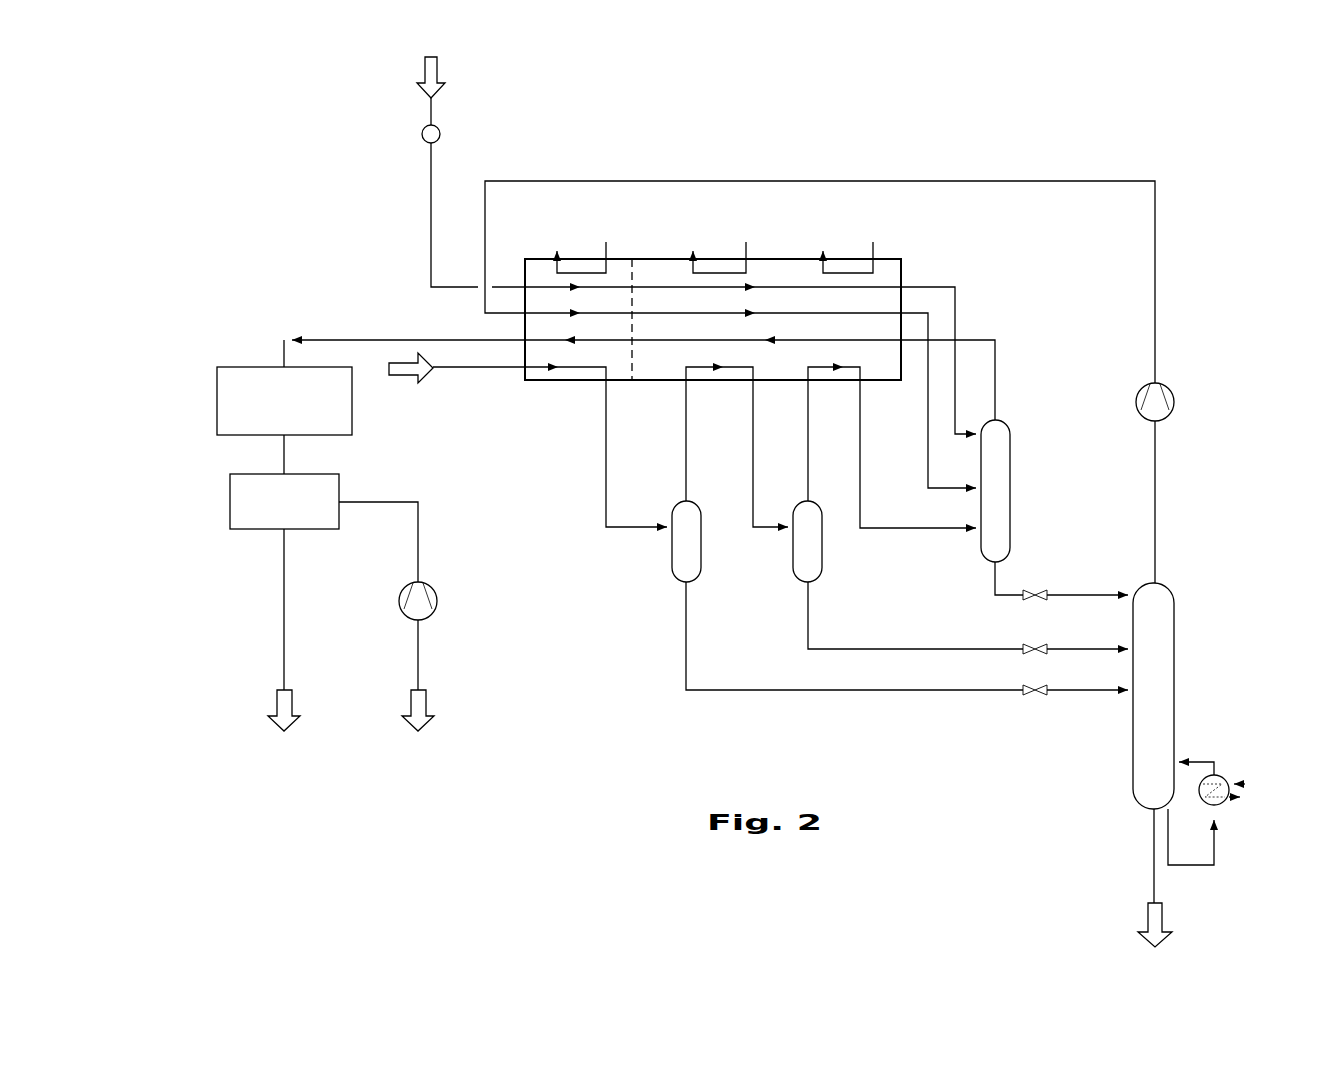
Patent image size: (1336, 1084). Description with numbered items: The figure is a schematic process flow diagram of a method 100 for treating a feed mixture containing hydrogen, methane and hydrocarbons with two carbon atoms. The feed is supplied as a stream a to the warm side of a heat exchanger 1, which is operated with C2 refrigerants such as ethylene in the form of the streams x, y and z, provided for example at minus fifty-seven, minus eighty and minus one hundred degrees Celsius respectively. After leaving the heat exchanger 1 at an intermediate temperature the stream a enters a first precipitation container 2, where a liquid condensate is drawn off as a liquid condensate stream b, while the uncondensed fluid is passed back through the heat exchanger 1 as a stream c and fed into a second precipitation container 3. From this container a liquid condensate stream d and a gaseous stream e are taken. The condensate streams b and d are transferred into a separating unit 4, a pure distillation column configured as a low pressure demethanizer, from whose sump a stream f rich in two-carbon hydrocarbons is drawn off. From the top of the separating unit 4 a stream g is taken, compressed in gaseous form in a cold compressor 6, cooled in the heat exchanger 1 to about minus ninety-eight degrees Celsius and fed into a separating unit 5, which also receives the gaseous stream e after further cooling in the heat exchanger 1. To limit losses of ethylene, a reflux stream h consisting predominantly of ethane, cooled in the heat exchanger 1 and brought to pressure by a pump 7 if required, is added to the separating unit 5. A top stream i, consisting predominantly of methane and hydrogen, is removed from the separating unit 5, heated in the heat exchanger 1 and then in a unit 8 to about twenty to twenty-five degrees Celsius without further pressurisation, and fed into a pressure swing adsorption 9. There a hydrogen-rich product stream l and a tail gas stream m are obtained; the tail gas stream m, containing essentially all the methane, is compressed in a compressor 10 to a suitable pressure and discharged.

The heat exchanger 1 is at (582, 382).
The first precipitation container 2 is at (672, 560).
The second precipitation container 3 is at (793, 560).
The separating unit 4 is at (1174, 592).
The separating unit 5 is at (1010, 505).
The compressor 6 is at (1174, 402).
The pump 7 is at (422, 134).
The unit 8 is at (217, 405).
The pressure swing adsorption 9 is at (316, 474).
The compressor 10 is at (437, 600).
The method 100 is at (552, 828).
The stream a is at (495, 368).
The liquid condensate stream b is at (686, 652).
The stream c is at (686, 448).
The liquid condensate stream d is at (808, 595).
The gaseous stream e is at (808, 450).
The stream f is at (1148, 852).
The stream g is at (927, 415).
The reflux stream h is at (431, 173).
The top stream i is at (995, 365).
The hydrogen-rich product stream l is at (284, 617).
The tail gas stream m is at (418, 525).
The stream x is at (606, 256).
The stream y is at (746, 256).
The stream z is at (873, 256).